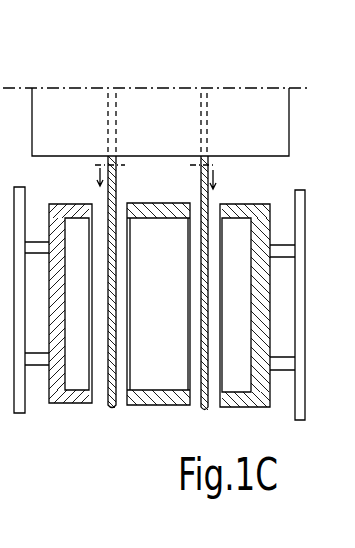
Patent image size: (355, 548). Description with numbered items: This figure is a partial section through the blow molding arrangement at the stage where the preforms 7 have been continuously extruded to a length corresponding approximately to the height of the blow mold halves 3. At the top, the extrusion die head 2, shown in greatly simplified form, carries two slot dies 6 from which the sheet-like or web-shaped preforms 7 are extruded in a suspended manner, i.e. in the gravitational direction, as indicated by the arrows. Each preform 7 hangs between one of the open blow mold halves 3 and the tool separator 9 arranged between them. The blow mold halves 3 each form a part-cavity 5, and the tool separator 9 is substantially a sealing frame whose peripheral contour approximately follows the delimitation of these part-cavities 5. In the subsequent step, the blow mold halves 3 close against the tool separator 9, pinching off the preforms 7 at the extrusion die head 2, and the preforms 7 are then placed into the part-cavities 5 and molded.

The extrusion die head 2 is at (243, 110).
The blow mold halves 3 is at (70, 404).
The part-cavities 5 is at (79, 373).
The slot dies 6 is at (107, 158).
The preforms 7 is at (113, 406).
The tool separator 9 is at (165, 398).